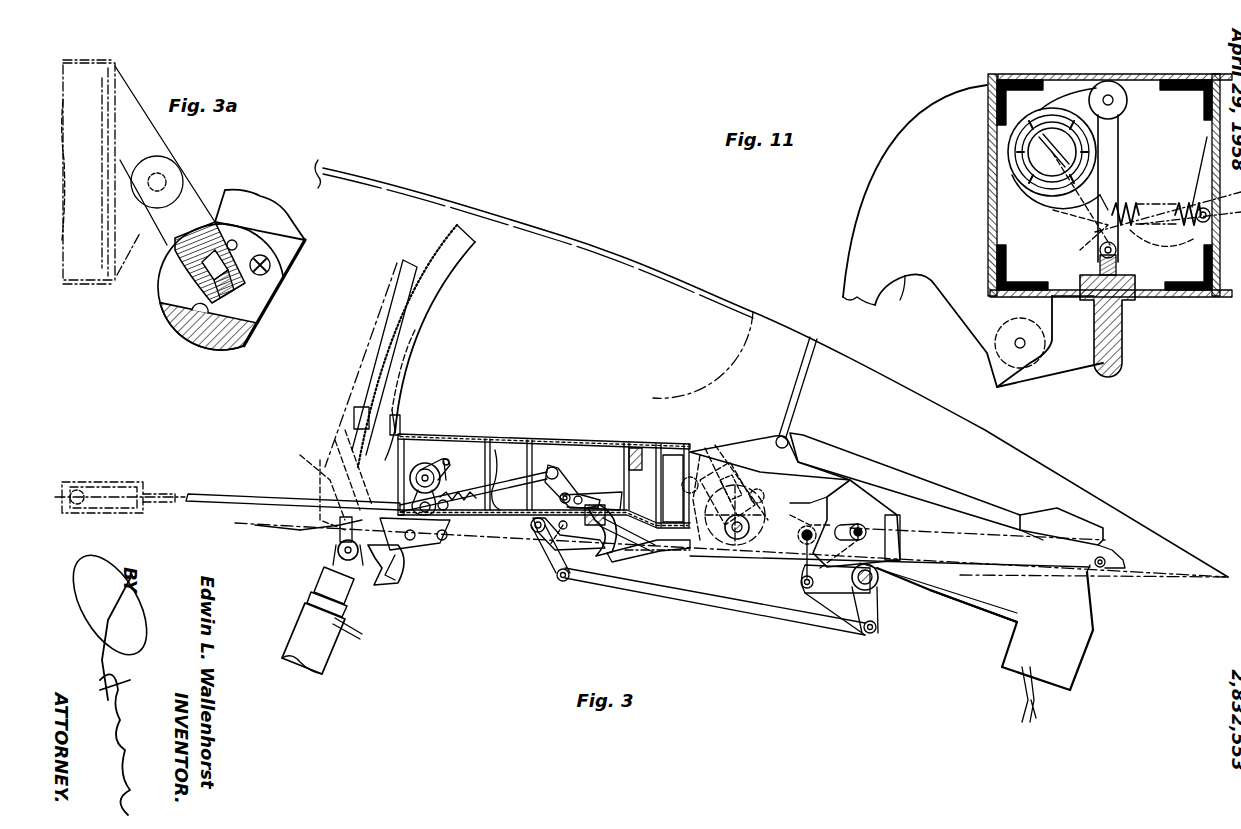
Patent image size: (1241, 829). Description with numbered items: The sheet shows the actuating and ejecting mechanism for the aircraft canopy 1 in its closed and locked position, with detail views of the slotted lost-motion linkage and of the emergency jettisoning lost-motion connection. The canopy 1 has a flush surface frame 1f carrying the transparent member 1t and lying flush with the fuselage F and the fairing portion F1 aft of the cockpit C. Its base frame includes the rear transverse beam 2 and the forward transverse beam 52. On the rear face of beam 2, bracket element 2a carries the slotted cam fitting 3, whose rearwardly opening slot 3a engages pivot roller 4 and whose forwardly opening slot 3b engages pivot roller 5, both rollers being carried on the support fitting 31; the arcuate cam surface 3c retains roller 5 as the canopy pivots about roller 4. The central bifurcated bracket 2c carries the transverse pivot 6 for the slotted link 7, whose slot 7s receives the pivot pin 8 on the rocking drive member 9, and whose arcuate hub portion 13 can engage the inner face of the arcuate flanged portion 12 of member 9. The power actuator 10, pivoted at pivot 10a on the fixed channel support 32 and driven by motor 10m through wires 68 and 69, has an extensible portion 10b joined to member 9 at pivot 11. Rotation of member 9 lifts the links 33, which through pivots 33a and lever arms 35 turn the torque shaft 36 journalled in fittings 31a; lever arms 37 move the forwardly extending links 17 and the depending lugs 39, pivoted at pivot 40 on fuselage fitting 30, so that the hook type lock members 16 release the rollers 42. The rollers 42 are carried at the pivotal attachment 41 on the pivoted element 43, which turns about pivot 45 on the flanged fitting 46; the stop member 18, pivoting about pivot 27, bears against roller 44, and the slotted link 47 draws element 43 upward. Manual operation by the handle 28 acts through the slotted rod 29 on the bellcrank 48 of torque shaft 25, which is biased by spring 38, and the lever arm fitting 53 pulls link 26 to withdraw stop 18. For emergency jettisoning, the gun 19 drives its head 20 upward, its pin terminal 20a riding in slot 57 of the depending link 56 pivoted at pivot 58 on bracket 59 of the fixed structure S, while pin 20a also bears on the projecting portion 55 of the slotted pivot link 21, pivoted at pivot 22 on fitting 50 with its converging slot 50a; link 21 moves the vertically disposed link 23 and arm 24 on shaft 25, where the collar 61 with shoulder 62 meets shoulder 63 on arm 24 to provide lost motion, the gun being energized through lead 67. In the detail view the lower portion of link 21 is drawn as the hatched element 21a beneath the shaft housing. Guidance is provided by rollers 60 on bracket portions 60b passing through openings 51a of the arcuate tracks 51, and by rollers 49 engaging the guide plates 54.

In FIG. 3, the canopy 1 is at (550, 216).
In FIG. 3, the transparent member 1t is at (660, 268).
In FIG. 3, the flush surface frame 1f is at (783, 330).
In FIG. 3A, the rear transverse beam 2 is at (84, 300).
In FIG. 3, the rear transverse beam 2 is at (678, 450).
In FIG. 3, the bracket element 2a is at (760, 560).
In FIG. 3A, the bifurcated bracket 2c is at (147, 106).
In FIG. 3, the bifurcated bracket 2c is at (700, 462).
In FIG. 3, the slotted cam fitting 3 is at (858, 486).
In FIG. 3, the rearwardly opening slot 3a is at (850, 540).
In FIG. 3, the forwardly opening slot 3b is at (800, 530).
In FIG. 3, the arcuate cam surface 3c is at (805, 555).
In FIG. 3, the pivot roller 4 is at (886, 513).
In FIG. 3, the pivot roller 5 is at (820, 525).
In FIG. 3A, the transverse pivot 6 is at (166, 180).
In FIG. 3, the transverse pivot 6 is at (690, 492).
In FIG. 3A, the slotted link 7 is at (180, 268).
In FIG. 3, the slotted link 7 is at (722, 488).
In FIG. 3A, the slot 7s is at (222, 270).
In FIG. 3, the slot 7s is at (730, 552).
In FIG. 3A, the pivot pin 8 is at (230, 290).
In FIG. 3, the pivot pin 8 is at (736, 495).
In FIG. 3A, the rocking drive member 9 is at (252, 198).
In FIG. 3, the rocking drive member 9 is at (768, 440).
In FIG. 3, the power actuator 10 is at (993, 492).
In FIG. 3, the pivot 10a is at (1103, 570).
In FIG. 3, the extensible portion 10b is at (825, 445).
In FIG. 3, the motor 10m is at (1085, 650).
In FIG. 3, the pivot 11 is at (783, 425).
In FIG. 3A, the arcuate flanged portion 12 is at (205, 345).
In FIG. 3, the arcuate flanged portion 12 is at (720, 555).
In FIG. 3A, the arcuate hub portion 13 is at (168, 240).
In FIG. 3, the arcuate hub portion 13 is at (700, 530).
In FIG. 3, the hook type lock member 16 is at (608, 558).
In FIG. 3, the forwardly extending link 17 is at (725, 612).
In FIG. 3, the stop member 18 is at (555, 460).
In FIG. 3, the jettisoning gun 19 is at (334, 664).
In FIG. 3, the piston or head portion 20 is at (325, 578).
In FIG. 3, the pivotal pin terminal 20a is at (310, 600).
In FIG. 11, the slotted pivot link 21 is at (1075, 372).
In FIG. 3, the slotted pivot link 21 is at (392, 572).
In FIG. 11, the bolt 21a is at (1118, 355).
In FIG. 11, the pivot 22 is at (1018, 335).
In FIG. 3, the pivot 22 is at (412, 545).
In FIG. 11, the vertically disposed link 23 is at (1098, 250).
In FIG. 3, the vertically disposed link 23 is at (449, 536).
In FIG. 11, the arm 24 is at (1058, 103).
In FIG. 3, the arm 24 is at (440, 460).
In FIG. 11, the torque shaft 25 is at (1032, 197).
In FIG. 3, the torque shaft 25 is at (417, 455).
In FIG. 11, the link 26 is at (1140, 256).
In FIG. 3, the link 26 is at (492, 475).
In FIG. 3, the pivot 27 is at (470, 502).
In FIG. 3, the handle 28 is at (120, 482).
In FIG. 3, the slotted rod 29 is at (222, 493).
In FIG. 3, the fuselage fitting 30 is at (490, 560).
In FIG. 3, the support fitting 31 is at (915, 525).
In FIG. 3, the fitting 31a is at (905, 576).
In FIG. 3, the fixed channel support 32 is at (1128, 550).
In FIG. 3, the link 33 is at (800, 580).
In FIG. 3, the pivot 33a is at (800, 626).
In FIG. 3, the lever arm 35 is at (836, 585).
In FIG. 3, the torque shaft 36 is at (875, 590).
In FIG. 3, the lever arm 37 is at (886, 625).
In FIG. 11, the spring 38 is at (1132, 228).
In FIG. 3, the depending lug 39 is at (555, 575).
In FIG. 3, the pivot 40 is at (542, 545).
In FIG. 3, the pivotal attachment 41 is at (615, 535).
In FIG. 3, the roller 42 is at (608, 530).
In FIG. 3, the pivoted element 43 is at (583, 495).
In FIG. 3, the roller 44 is at (580, 492).
In FIG. 3, the pivot 45 is at (566, 530).
In FIG. 3, the flanged fitting 46 is at (625, 490).
In FIG. 3, the slotted link 47 is at (610, 480).
In FIG. 3, the bellcrank 48 is at (400, 410).
In FIG. 3, the roller 49 is at (325, 440).
In FIG. 11, the fitting 50 is at (932, 112).
In FIG. 3, the fitting 50 is at (440, 550).
In FIG. 11, the converging slot 50a is at (908, 296).
In FIG. 3, the arcuate track 51 is at (432, 305).
In FIG. 3, the opening 51a is at (400, 385).
In FIG. 11, the transverse beam 52 is at (1148, 73).
In FIG. 3, the transverse beam 52 is at (462, 435).
In FIG. 11, the lever arm fitting 53 is at (1050, 240).
In FIG. 3, the lever arm fitting 53 is at (445, 478).
In FIG. 3, the guide plate 54 is at (368, 378).
In FIG. 3, the projecting portion 55 is at (392, 587).
In FIG. 3, the depending link 56 is at (305, 530).
In FIG. 3, the slot 57 is at (352, 565).
In FIG. 3, the pivot 58 is at (322, 480).
In FIG. 3, the bracket 59 is at (340, 455).
In FIG. 3, the roller 60 is at (354, 410).
In FIG. 3, the bracket portion 60b is at (400, 425).
In FIG. 11, the collar or sleeve 61 is at (1055, 195).
In FIG. 11, the shoulder 62 is at (1010, 146).
In FIG. 11, the shoulder 63 is at (1108, 170).
In FIG. 3, the lead 67 is at (357, 636).
In FIG. 3, the wire 68 is at (1018, 706).
In FIG. 3, the wire 69 is at (1032, 708).
In FIG. 3, the fixed structure S is at (375, 320).
In FIG. 3, the cockpit C is at (255, 524).
In FIG. 3, the fuselage F is at (1188, 585).
In FIG. 3, the fairing portion F1 is at (1022, 445).